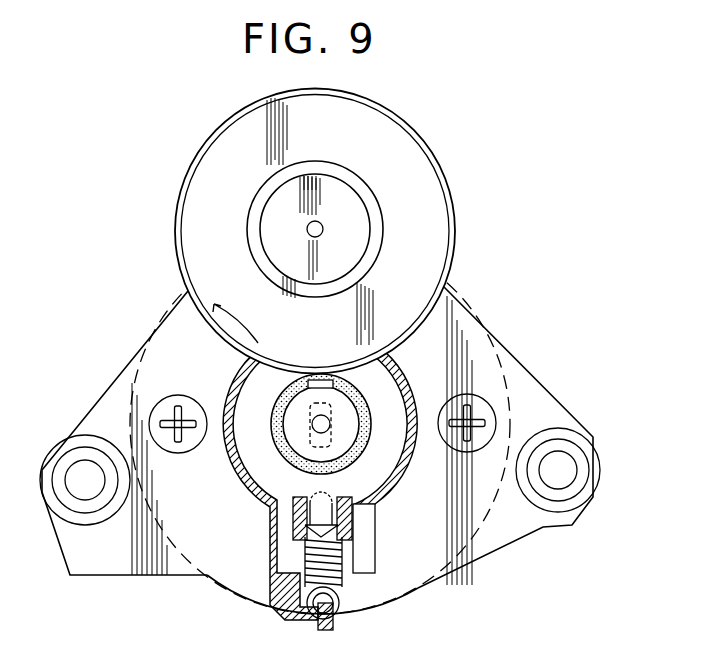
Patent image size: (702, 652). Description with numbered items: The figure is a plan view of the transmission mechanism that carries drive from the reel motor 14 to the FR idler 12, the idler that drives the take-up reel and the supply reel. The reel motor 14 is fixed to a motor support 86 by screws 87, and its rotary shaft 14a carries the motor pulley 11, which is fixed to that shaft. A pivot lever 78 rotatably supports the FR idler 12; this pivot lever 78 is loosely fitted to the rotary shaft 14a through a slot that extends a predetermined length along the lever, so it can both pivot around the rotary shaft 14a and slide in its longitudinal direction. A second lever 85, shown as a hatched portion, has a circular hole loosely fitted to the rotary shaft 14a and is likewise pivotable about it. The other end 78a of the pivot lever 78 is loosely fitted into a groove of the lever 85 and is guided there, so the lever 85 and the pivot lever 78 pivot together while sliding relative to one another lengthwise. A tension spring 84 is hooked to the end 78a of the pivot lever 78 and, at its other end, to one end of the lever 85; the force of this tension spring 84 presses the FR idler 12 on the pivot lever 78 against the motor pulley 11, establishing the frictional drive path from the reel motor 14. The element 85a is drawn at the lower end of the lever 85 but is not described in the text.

The FR idler 12 is at (421, 137).
The reel motor 14 is at (482, 527).
The rotary shaft 14a is at (366, 396).
The motor pulley 11 is at (331, 424).
The lever 85 is at (233, 468).
The pin 85a is at (336, 625).
The pivot lever 78 is at (374, 557).
The other end of the pivot lever 78a is at (308, 514).
The tension spring 84 is at (308, 556).
The motor support 86 is at (573, 418).
The screws 87 is at (182, 395).